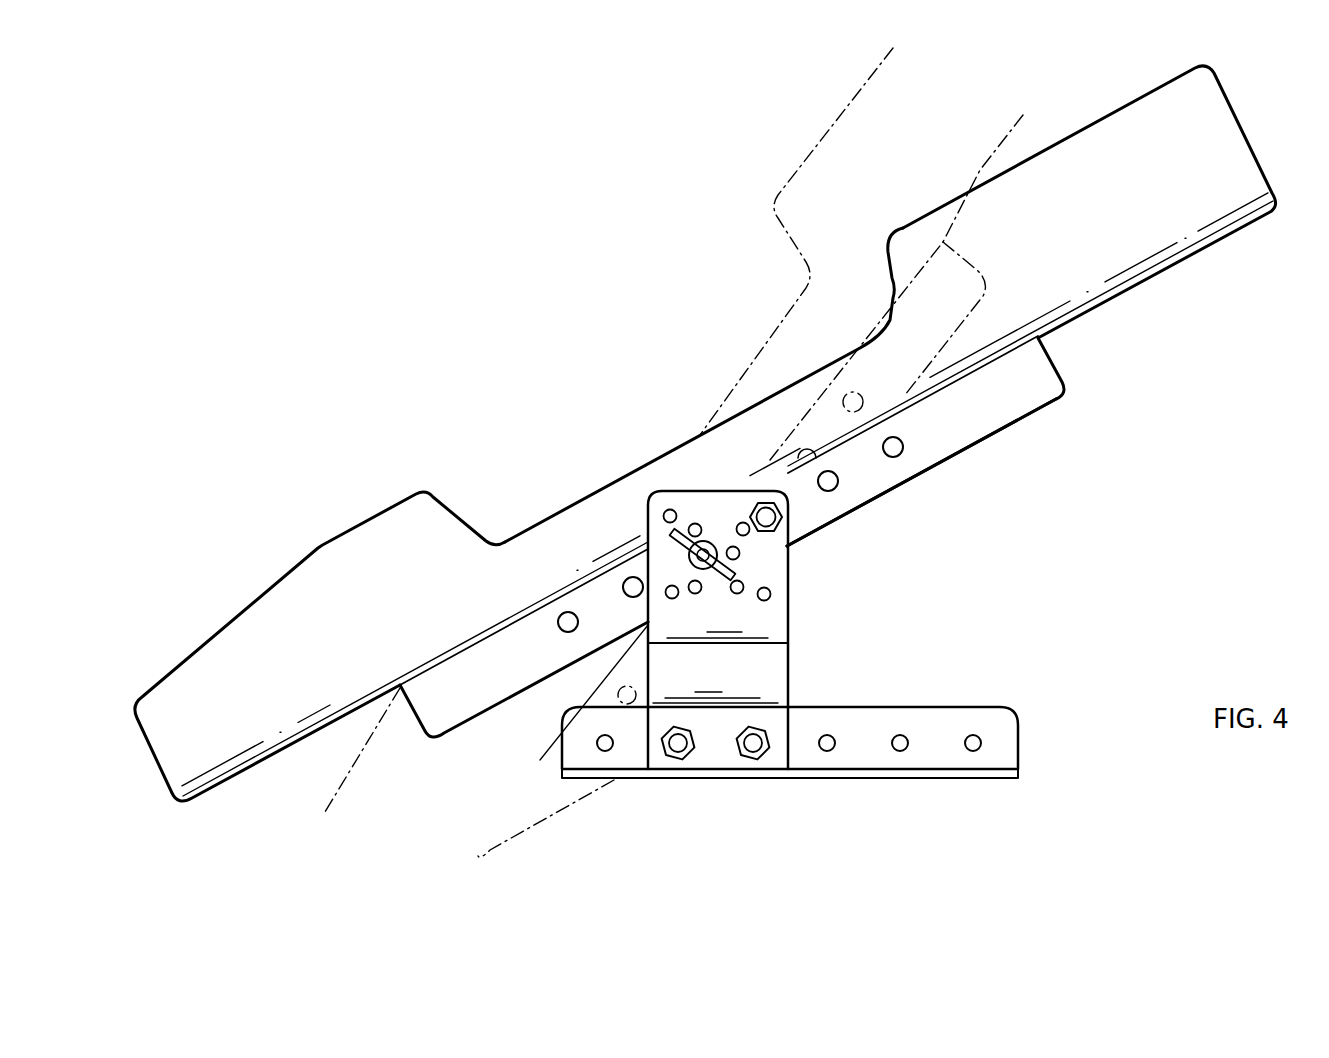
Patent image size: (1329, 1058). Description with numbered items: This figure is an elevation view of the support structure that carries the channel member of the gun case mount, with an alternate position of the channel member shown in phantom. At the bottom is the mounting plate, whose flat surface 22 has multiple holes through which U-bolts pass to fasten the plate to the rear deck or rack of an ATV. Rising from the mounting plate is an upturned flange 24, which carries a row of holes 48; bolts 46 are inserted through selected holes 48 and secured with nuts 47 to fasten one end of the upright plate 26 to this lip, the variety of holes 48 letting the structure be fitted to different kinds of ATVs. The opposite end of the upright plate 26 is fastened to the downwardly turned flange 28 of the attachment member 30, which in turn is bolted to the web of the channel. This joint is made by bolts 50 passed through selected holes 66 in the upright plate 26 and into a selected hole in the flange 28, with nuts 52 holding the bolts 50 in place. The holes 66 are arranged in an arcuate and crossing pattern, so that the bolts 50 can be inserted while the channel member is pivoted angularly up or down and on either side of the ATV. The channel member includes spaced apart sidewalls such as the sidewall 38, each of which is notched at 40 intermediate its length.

The flat surface 22 is at (887, 780).
The upturned flange 24 is at (877, 744).
The upright plate 26 is at (789, 638).
The downwardly turned flange 28 is at (1007, 403).
The attachment member 30 is at (1010, 427).
The sidewall 38 is at (350, 628).
The notch 40 is at (657, 457).
The bolts 46 is at (753, 750).
The nuts 47 is at (767, 753).
The holes 48 is at (910, 740).
The bolts 50 is at (668, 531).
The nuts 52 is at (690, 548).
The holes 66 is at (772, 595).